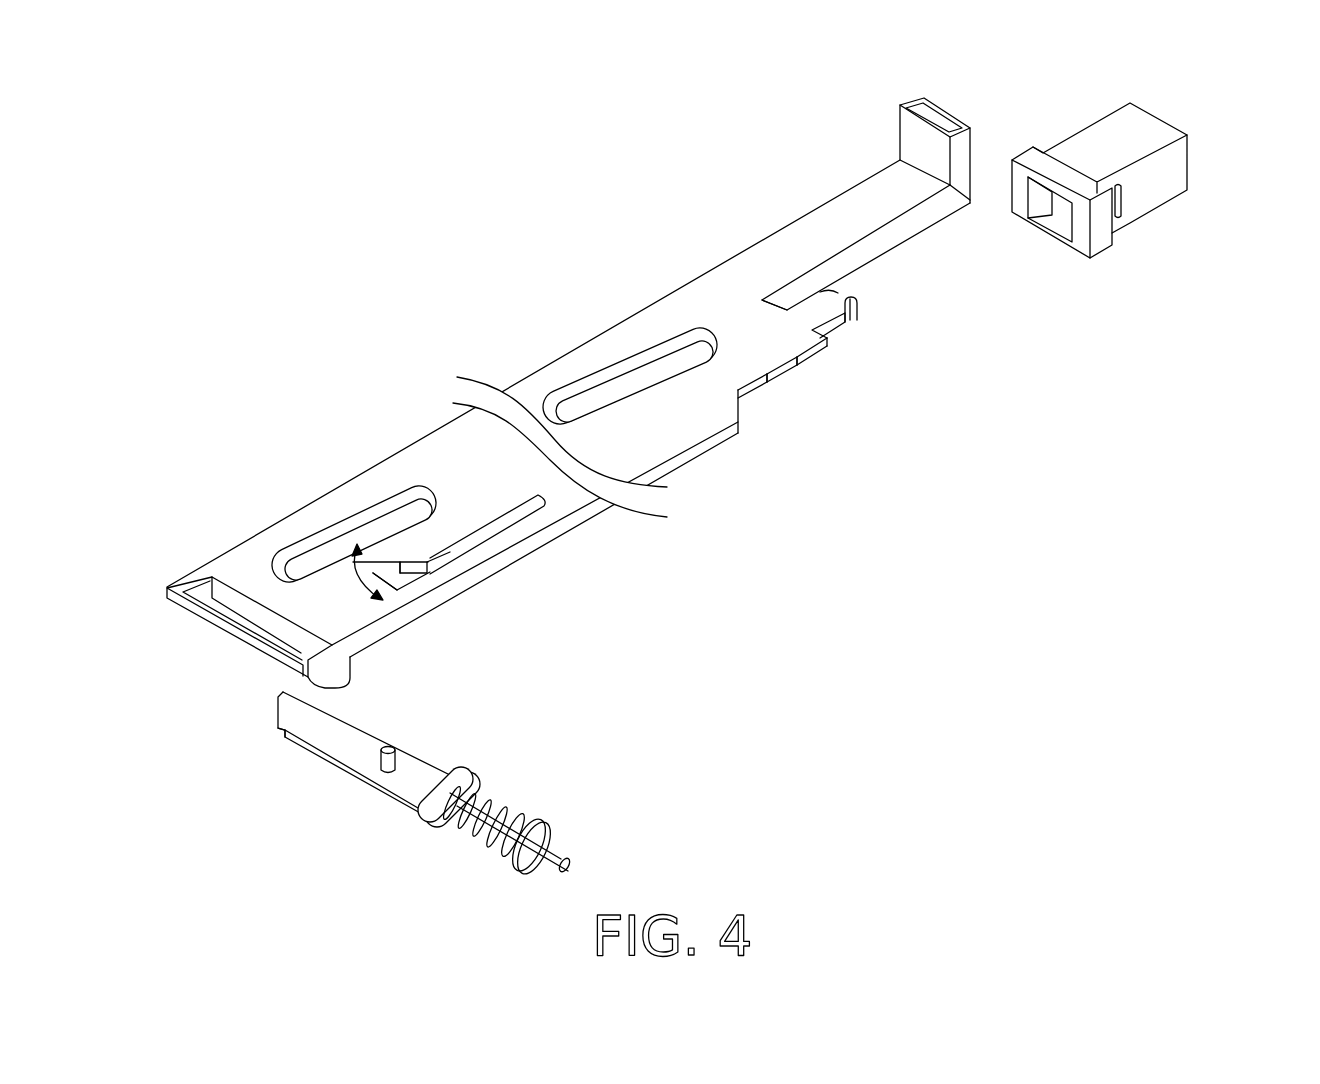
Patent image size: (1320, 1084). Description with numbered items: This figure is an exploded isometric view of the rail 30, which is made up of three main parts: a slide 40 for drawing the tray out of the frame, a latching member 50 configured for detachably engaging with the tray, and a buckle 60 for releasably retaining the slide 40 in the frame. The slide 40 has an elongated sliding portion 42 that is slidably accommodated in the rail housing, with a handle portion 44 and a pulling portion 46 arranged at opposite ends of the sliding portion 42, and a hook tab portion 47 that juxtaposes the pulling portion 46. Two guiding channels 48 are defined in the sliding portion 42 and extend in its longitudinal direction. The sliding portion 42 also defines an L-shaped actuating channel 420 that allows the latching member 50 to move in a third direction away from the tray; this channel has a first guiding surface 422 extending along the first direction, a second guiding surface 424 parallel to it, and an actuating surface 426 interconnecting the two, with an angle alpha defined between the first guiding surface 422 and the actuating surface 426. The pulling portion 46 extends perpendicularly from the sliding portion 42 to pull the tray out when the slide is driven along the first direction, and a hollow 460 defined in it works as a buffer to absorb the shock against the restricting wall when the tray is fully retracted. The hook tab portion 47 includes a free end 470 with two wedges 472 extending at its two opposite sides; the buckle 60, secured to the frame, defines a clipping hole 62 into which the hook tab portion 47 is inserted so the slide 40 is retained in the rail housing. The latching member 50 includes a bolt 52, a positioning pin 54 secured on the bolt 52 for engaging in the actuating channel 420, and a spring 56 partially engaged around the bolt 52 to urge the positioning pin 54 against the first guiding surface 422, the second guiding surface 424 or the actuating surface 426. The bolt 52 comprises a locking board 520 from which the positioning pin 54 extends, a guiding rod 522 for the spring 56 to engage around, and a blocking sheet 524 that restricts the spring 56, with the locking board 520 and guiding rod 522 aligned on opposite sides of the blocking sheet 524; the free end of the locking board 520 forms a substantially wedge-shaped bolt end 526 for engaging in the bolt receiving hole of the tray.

The rail 30 is at (568, 112).
The slide 40 is at (515, 330).
The sliding portion 42 is at (580, 512).
The handle portion 44 is at (213, 624).
The pulling portion 46 is at (913, 130).
The hollow 460 is at (948, 111).
The hook tab portion 47 is at (856, 299).
The free end 470 is at (820, 293).
The wedges 472 is at (843, 318).
The guiding channels 48 is at (653, 380).
The actuating channel 420 is at (568, 598).
The first guiding surface 422 is at (387, 580).
The second guiding surface 424 is at (450, 557).
The actuating surface 426 is at (402, 574).
The latching member 50 is at (338, 770).
The bolt 52 is at (676, 825).
The locking board 520 is at (410, 778).
The guiding rod 522 is at (552, 848).
The blocking sheet 524 is at (467, 786).
The bolt end 526 is at (278, 700).
The positioning pin 54 is at (394, 750).
The spring 56 is at (491, 837).
The buckle 60 is at (1186, 133).
The clipping hole 62 is at (1062, 218).